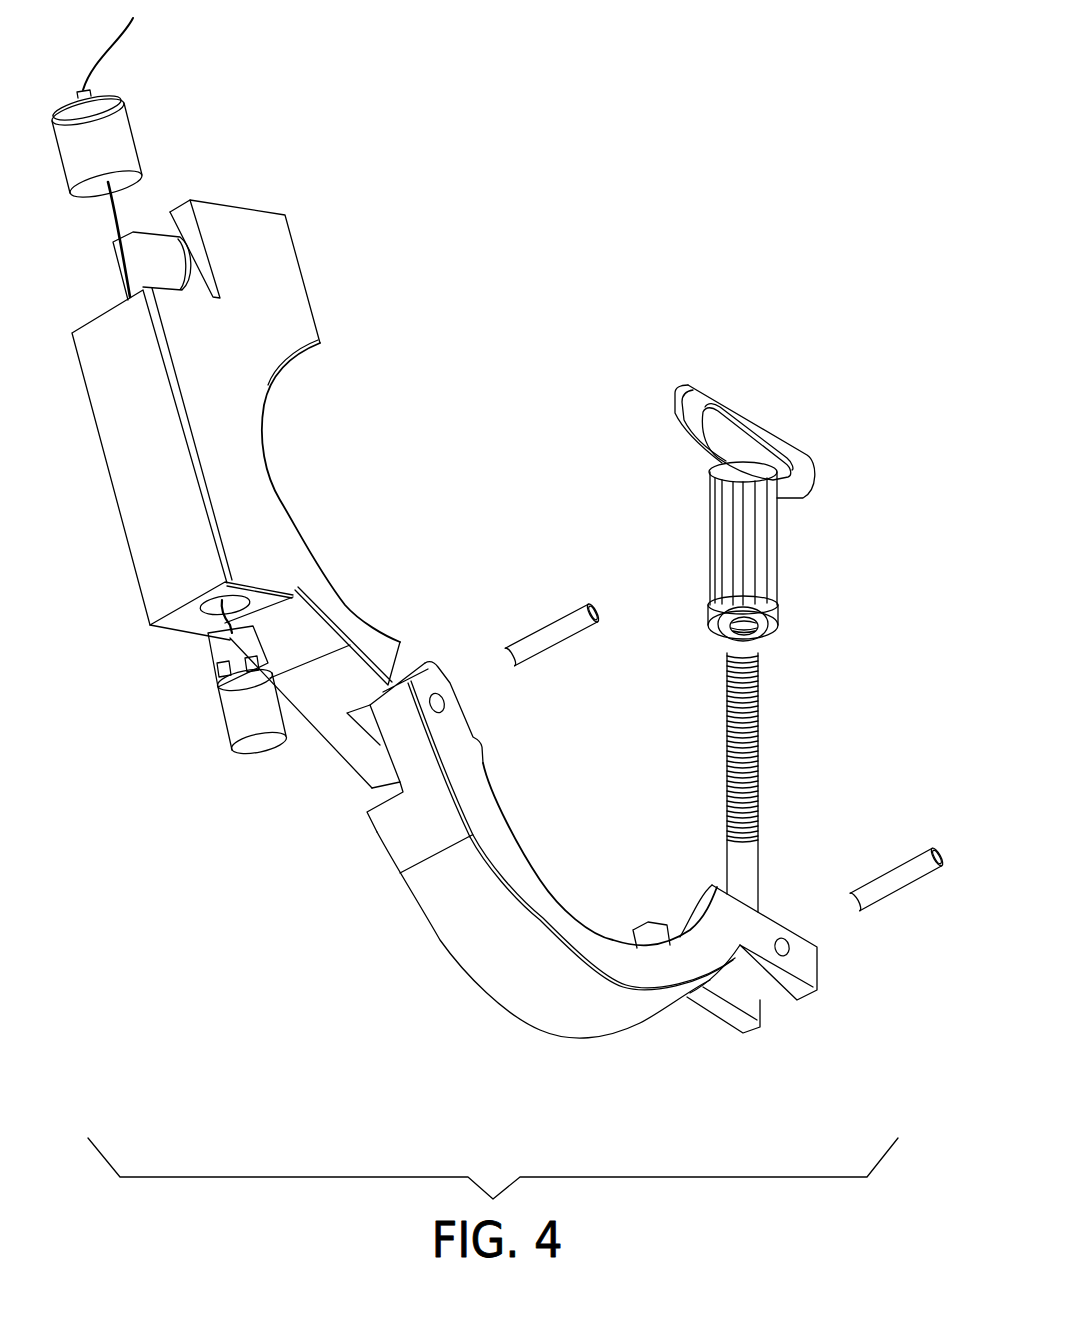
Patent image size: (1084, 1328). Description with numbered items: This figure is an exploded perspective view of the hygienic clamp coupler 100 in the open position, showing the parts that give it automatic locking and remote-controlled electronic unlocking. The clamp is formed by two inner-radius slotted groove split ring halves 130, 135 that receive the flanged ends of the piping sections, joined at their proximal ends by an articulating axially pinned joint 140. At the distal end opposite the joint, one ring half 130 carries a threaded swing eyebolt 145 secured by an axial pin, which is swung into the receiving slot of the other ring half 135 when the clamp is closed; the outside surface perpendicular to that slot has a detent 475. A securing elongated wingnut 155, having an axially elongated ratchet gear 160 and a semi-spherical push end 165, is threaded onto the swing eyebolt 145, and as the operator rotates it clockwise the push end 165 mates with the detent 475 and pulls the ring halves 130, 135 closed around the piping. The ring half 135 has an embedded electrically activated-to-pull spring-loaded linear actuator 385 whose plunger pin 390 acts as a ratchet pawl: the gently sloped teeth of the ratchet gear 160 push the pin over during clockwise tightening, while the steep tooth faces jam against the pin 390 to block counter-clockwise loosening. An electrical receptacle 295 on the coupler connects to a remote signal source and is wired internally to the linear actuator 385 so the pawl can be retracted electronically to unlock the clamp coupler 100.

The hygienic clamp coupler 100 is at (362, 915).
The slotted groove split ring half 130 is at (523, 960).
The slotted groove split ring half 135 is at (258, 313).
The articulating axially pinned joint 140 is at (425, 665).
The threaded swing eyebolt 145 is at (750, 817).
The securing elongated wingnut 155 is at (705, 398).
The axially elongated ratchet gear 160 is at (767, 552).
The semi-spherical push end 165 is at (777, 625).
The electrical receptacle 295 is at (240, 727).
The electrically activated-to-pull spring-loaded linear actuator 385 is at (120, 143).
The linear actuator plunger pin 390 is at (118, 45).
The detent 475 is at (140, 277).